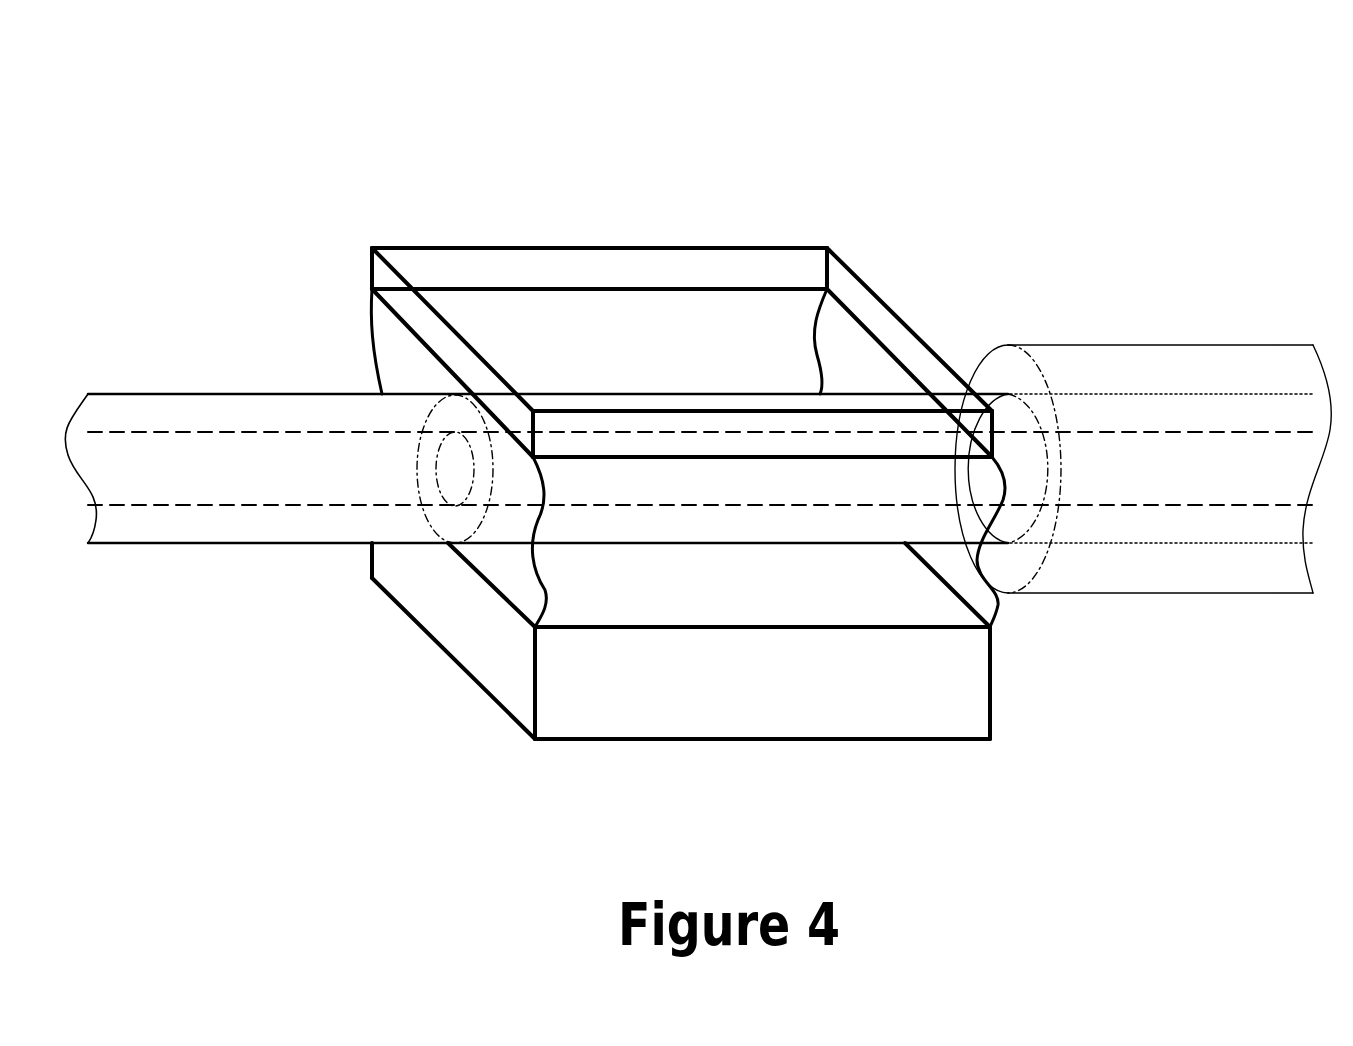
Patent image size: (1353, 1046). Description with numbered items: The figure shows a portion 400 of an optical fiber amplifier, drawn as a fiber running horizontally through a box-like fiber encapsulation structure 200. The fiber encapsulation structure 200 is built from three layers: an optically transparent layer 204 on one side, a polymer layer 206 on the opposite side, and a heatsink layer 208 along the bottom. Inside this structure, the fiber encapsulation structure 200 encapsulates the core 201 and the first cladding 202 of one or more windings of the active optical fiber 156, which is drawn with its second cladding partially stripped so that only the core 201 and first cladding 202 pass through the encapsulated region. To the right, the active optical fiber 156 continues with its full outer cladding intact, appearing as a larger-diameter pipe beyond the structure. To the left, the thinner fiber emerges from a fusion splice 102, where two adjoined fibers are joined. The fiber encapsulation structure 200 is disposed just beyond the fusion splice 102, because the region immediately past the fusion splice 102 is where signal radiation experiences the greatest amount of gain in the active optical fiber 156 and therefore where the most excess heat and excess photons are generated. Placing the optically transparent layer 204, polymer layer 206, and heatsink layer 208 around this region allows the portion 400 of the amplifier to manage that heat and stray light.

The portion of an optical fiber amplifier 400 is at (223, 67).
The fiber encapsulation structure 200 is at (448, 183).
The core 201 is at (788, 489).
The first cladding 202 is at (788, 539).
The optically transparent layer 204 is at (879, 290).
The polymer layer 206 is at (366, 325).
The heatsink layer 208 is at (662, 746).
The fusion splice 102 is at (446, 552).
The active optical fiber 156 is at (1180, 335).